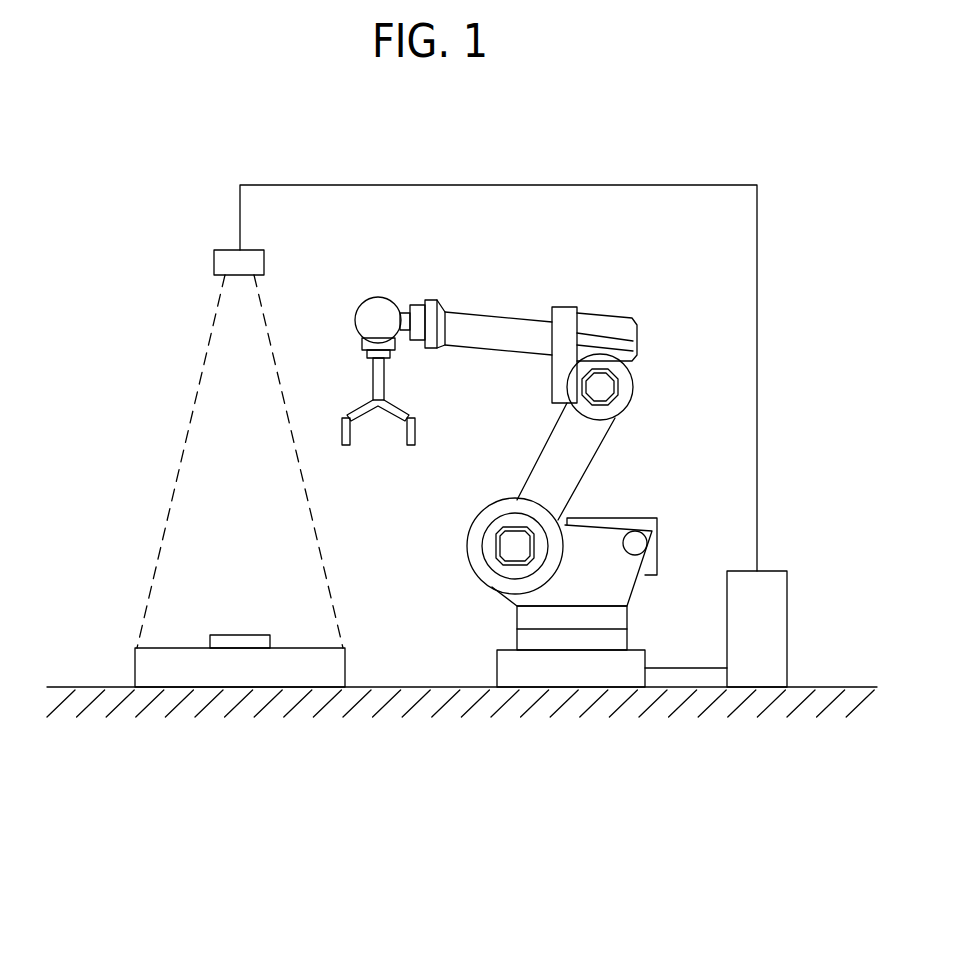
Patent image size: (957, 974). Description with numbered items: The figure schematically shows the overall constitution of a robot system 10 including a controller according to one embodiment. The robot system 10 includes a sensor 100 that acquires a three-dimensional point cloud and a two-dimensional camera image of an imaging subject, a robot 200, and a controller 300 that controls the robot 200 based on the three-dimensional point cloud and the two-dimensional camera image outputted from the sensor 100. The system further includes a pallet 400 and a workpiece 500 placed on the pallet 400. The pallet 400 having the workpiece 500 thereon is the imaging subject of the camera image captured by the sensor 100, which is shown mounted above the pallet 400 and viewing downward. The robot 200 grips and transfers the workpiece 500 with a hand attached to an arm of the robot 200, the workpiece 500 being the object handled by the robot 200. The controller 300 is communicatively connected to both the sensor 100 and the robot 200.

The robot system 10 is at (392, 142).
The sensor 100 is at (228, 250).
The robot 200 is at (505, 278).
The controller 300 is at (757, 672).
The pallet 400 is at (210, 678).
The workpiece 500 is at (253, 642).